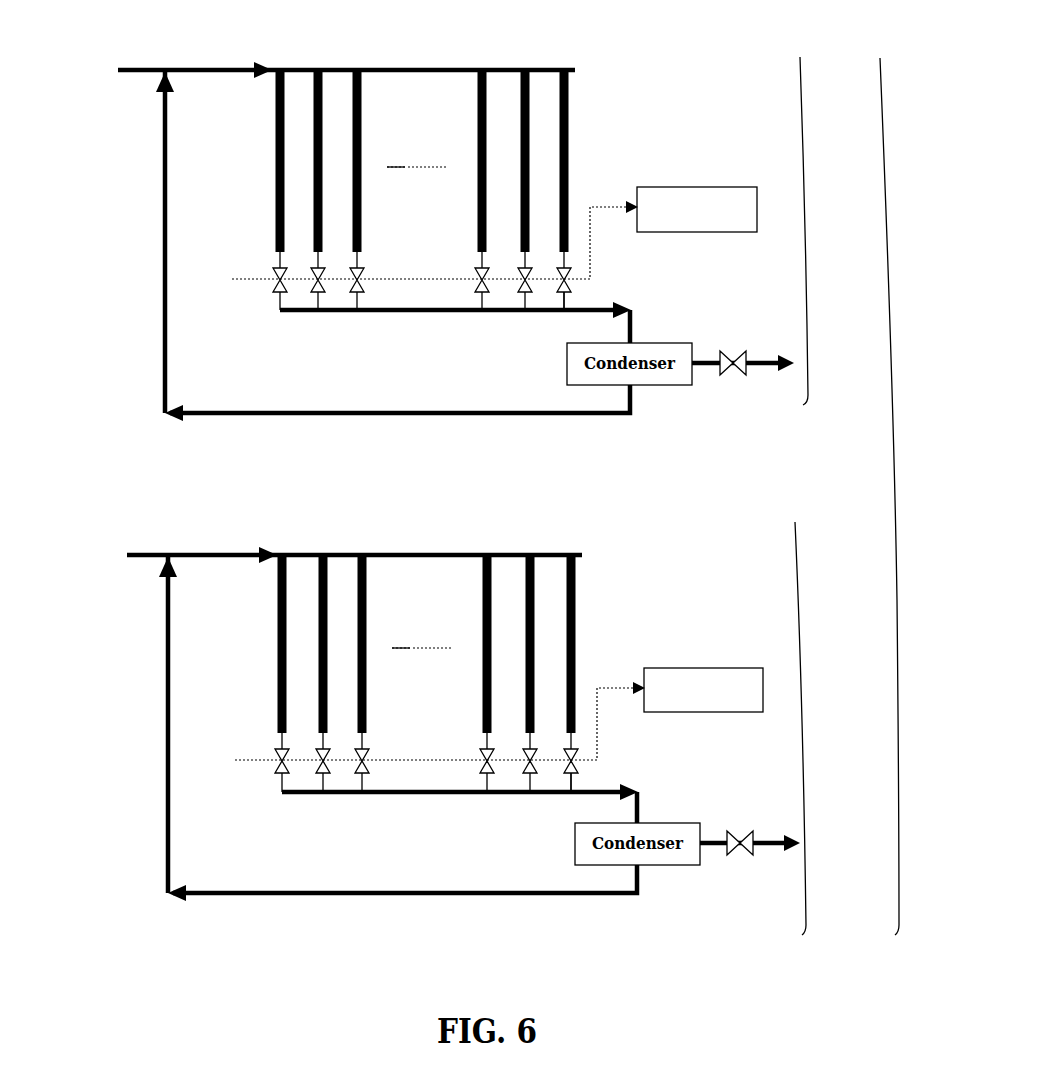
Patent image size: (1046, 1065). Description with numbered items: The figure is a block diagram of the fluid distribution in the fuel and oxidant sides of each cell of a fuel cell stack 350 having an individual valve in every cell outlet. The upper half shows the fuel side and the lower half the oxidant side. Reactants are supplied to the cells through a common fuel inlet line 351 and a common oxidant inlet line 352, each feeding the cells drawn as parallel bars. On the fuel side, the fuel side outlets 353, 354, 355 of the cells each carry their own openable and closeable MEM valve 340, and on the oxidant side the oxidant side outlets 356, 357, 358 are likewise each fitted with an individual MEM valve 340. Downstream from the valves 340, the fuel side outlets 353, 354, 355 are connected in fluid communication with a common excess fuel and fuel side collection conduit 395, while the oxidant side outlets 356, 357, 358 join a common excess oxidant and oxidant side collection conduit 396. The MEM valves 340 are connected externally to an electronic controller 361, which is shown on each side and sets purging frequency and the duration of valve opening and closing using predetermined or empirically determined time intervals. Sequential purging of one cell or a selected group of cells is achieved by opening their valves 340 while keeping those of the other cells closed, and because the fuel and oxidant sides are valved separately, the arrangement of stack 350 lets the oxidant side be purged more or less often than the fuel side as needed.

The fuel cell stack 350 is at (869, 496).
The common fuel inlet line 351 is at (145, 60).
The common oxidant inlet line 352 is at (152, 545).
The MEM valve 340 is at (260, 280).
The fuel side outlet 353 is at (261, 258).
The fuel side outlet 354 is at (305, 256).
The fuel side outlet 355 is at (374, 258).
The oxidant side outlet 356 is at (263, 740).
The oxidant side outlet 357 is at (310, 738).
The oxidant side outlet 358 is at (379, 740).
The electronic controller 361 is at (688, 172).
The common excess fuel and fuel side collection conduit 395 is at (577, 297).
The common excess oxidant and oxidant side collection conduit 396 is at (584, 777).